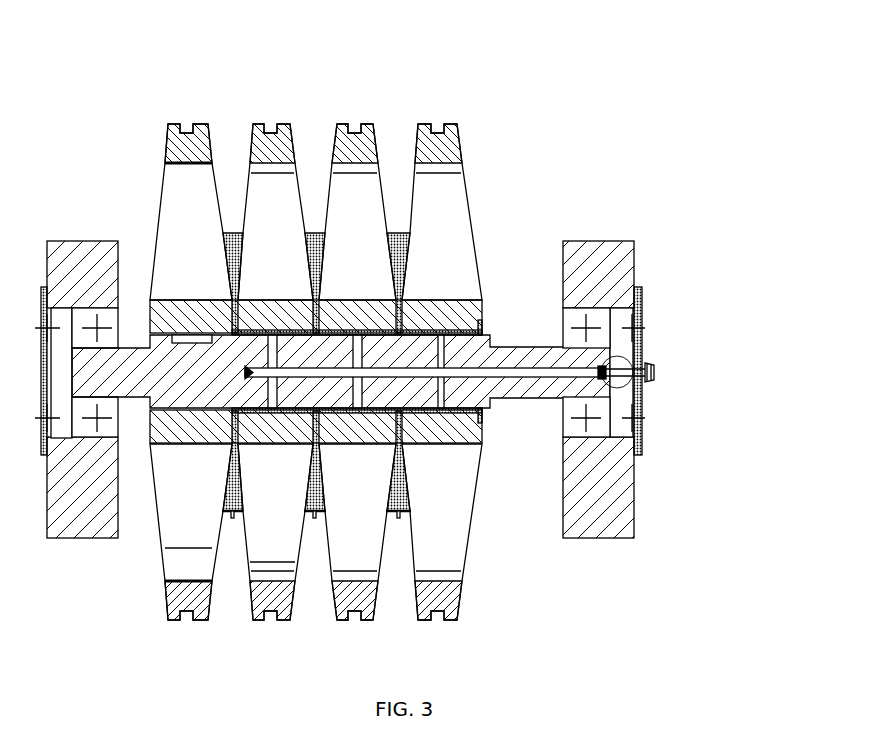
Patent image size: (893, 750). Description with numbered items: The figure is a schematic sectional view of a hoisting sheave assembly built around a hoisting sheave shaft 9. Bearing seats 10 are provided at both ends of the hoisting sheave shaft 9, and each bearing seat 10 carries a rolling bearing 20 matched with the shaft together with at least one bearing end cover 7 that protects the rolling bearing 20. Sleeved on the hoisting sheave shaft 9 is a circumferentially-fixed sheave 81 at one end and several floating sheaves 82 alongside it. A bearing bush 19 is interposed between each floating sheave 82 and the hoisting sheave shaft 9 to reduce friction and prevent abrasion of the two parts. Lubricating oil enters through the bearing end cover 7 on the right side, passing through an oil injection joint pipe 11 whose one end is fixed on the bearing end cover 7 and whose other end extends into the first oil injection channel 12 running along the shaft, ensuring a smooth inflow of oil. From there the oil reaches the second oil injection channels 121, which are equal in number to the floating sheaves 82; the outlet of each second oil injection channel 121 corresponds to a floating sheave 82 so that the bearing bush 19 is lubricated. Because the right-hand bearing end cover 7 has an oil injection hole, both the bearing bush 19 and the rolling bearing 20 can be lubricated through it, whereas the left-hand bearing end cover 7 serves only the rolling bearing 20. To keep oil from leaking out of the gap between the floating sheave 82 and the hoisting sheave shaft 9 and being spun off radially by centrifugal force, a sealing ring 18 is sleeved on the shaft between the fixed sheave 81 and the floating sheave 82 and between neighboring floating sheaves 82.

The fixed sheave 81 is at (188, 222).
The floating sheave 82 is at (270, 197).
The bearing bush 19 is at (428, 322).
The second oil injection channel 121 is at (447, 355).
The bearing seat 10 is at (585, 250).
The rolling bearing 20 is at (590, 320).
The bearing end cover 7 is at (641, 292).
The oil injection joint pipe 11 is at (645, 358).
The hoisting sheave shaft 9 is at (535, 383).
The first oil injection channel 12 is at (470, 372).
The sealing ring 18 is at (242, 502).